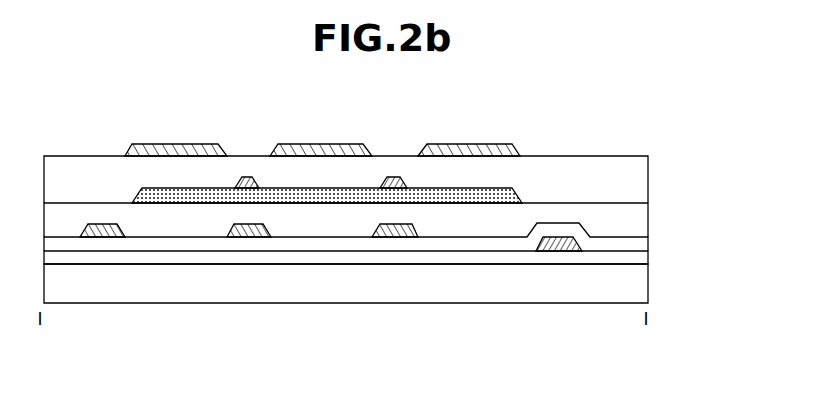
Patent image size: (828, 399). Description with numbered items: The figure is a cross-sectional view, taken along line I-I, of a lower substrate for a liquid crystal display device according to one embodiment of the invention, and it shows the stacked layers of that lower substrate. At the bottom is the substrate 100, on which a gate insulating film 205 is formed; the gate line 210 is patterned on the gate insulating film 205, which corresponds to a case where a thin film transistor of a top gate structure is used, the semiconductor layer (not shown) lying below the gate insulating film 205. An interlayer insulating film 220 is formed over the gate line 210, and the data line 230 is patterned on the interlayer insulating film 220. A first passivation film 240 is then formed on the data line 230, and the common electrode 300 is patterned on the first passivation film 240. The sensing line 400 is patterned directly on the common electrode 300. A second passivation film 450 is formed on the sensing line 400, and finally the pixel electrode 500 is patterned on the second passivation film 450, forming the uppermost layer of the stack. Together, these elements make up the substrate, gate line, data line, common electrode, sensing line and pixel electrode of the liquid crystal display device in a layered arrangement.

The substrate 100 is at (648, 283).
The gate insulating film 205 is at (648, 258).
The gate line 210 is at (557, 251).
The interlayer insulating film 220 is at (648, 247).
The data line 230 is at (250, 238).
The first passivation film 240 is at (648, 221).
The common electrode 300 is at (347, 195).
The sensing line 400 is at (244, 178).
The second passivation film 450 is at (648, 182).
The pixel electrode 500 is at (175, 144).